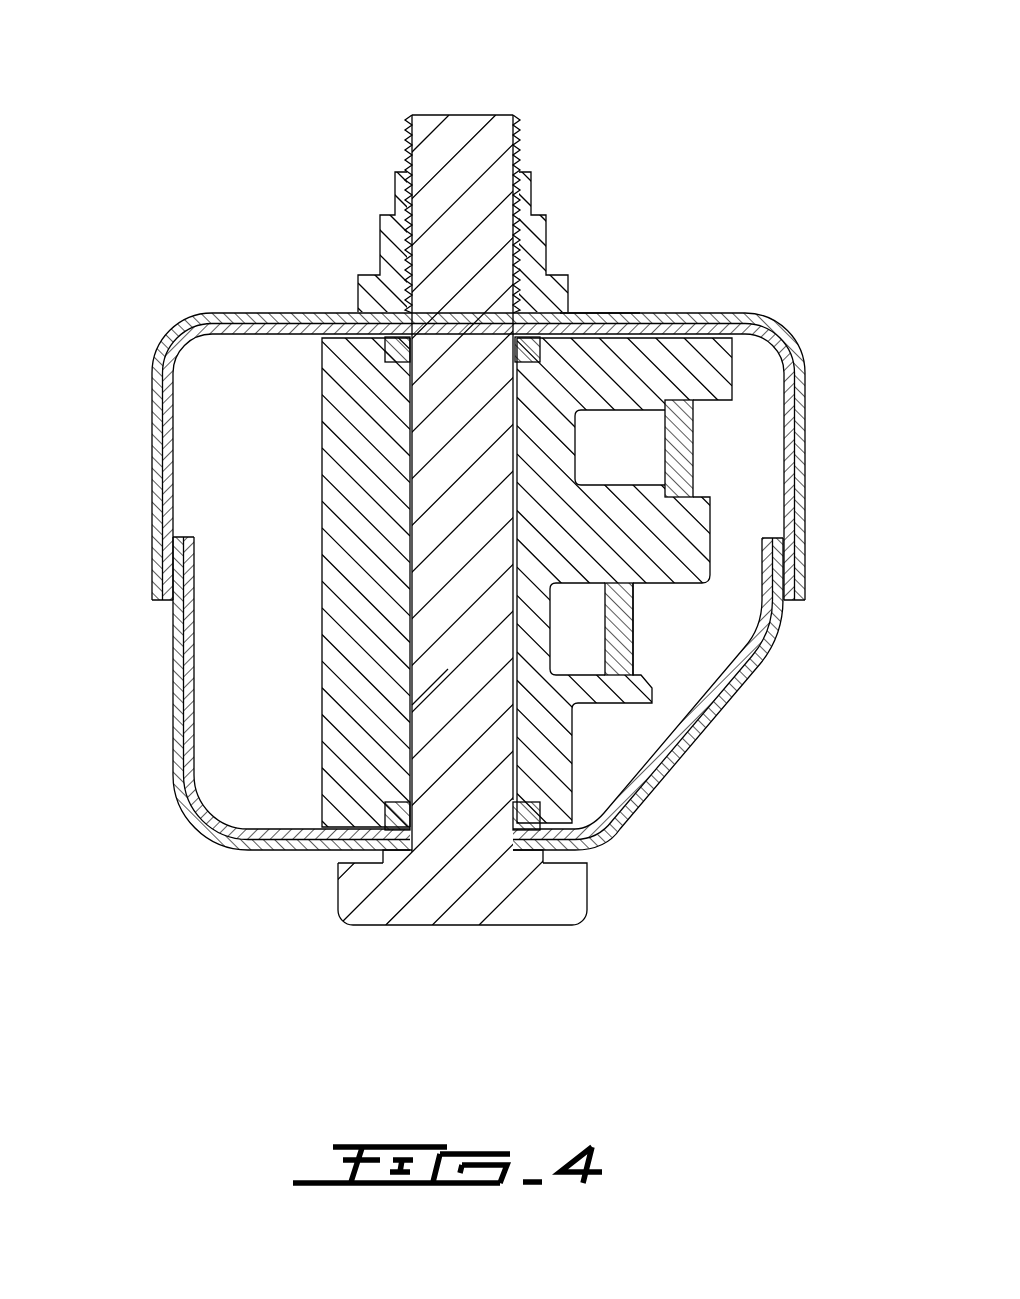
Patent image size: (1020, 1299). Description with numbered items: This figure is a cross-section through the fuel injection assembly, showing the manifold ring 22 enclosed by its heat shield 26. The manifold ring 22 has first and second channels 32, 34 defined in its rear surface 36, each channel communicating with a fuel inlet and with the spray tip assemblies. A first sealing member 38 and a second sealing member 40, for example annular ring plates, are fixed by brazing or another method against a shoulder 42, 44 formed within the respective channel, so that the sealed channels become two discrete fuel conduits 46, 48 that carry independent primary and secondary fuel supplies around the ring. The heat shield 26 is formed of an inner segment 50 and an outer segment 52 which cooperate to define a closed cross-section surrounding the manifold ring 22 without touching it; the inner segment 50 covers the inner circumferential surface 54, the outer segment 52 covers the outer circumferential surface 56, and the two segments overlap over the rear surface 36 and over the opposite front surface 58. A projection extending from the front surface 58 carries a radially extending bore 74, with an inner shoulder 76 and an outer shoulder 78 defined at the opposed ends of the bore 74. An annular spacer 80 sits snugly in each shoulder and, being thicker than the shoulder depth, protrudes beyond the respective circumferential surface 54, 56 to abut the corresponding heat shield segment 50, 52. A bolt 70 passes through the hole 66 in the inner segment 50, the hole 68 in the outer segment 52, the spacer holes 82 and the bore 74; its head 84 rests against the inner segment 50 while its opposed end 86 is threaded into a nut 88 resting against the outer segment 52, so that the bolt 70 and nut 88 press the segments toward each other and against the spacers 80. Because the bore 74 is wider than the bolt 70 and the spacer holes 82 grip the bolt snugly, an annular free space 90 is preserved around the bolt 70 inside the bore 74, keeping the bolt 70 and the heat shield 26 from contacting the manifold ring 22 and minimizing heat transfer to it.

The manifold ring 22 is at (308, 434).
The heat shield 26 is at (165, 327).
The first channel 32 is at (740, 315).
The second channel 34 is at (640, 787).
The rear surface 36 is at (783, 545).
The first sealing member 38 is at (693, 477).
The second sealing member 40 is at (730, 685).
The shoulder 42 is at (730, 400).
The shoulder 44 is at (635, 585).
The fuel conduit 46 is at (637, 453).
The fuel conduit 48 is at (690, 733).
The inner segment 50 is at (248, 855).
The outer segment 52 is at (218, 322).
The inner circumferential surface 54 is at (325, 832).
The outer circumferential surface 56 is at (573, 440).
The front surface 58 is at (322, 617).
The hole 66 is at (498, 847).
The hole 68 is at (395, 303).
The bolt 70 is at (425, 140).
The bore 74 is at (440, 705).
The inner shoulder 76 is at (360, 862).
The outer shoulder 78 is at (597, 316).
The spacer 80 is at (523, 335).
The spacer hole 82 is at (440, 265).
The head 84 is at (570, 898).
The end 86 is at (466, 128).
The nut 88 is at (522, 197).
The annular free space 90 is at (403, 773).